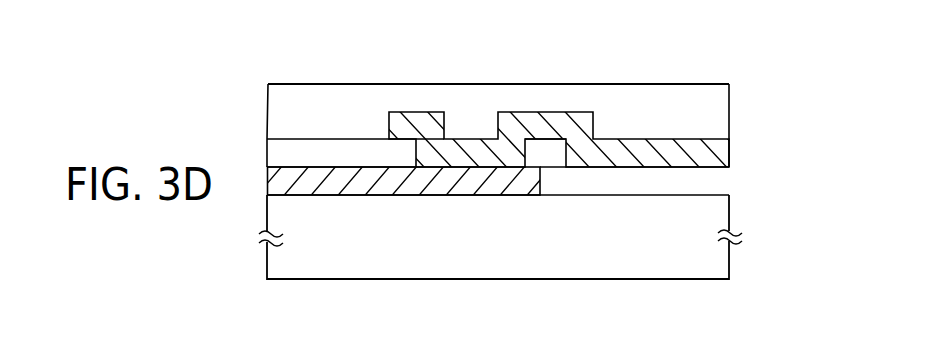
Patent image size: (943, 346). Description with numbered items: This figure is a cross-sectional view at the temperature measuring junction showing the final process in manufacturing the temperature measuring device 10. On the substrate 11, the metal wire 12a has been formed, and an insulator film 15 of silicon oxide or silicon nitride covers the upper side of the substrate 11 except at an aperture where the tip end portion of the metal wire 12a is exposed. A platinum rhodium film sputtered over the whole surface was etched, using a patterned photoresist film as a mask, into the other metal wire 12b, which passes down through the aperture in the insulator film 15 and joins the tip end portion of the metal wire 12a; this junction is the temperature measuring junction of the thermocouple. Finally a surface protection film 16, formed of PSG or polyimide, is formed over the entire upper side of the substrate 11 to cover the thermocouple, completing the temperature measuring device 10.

The temperature measuring device 10 is at (712, 65).
The substrate 11 is at (683, 267).
The metal wire 12a is at (327, 195).
The metal wire 12b is at (645, 147).
The insulator film 15 is at (277, 155).
The surface protection film 16 is at (325, 93).